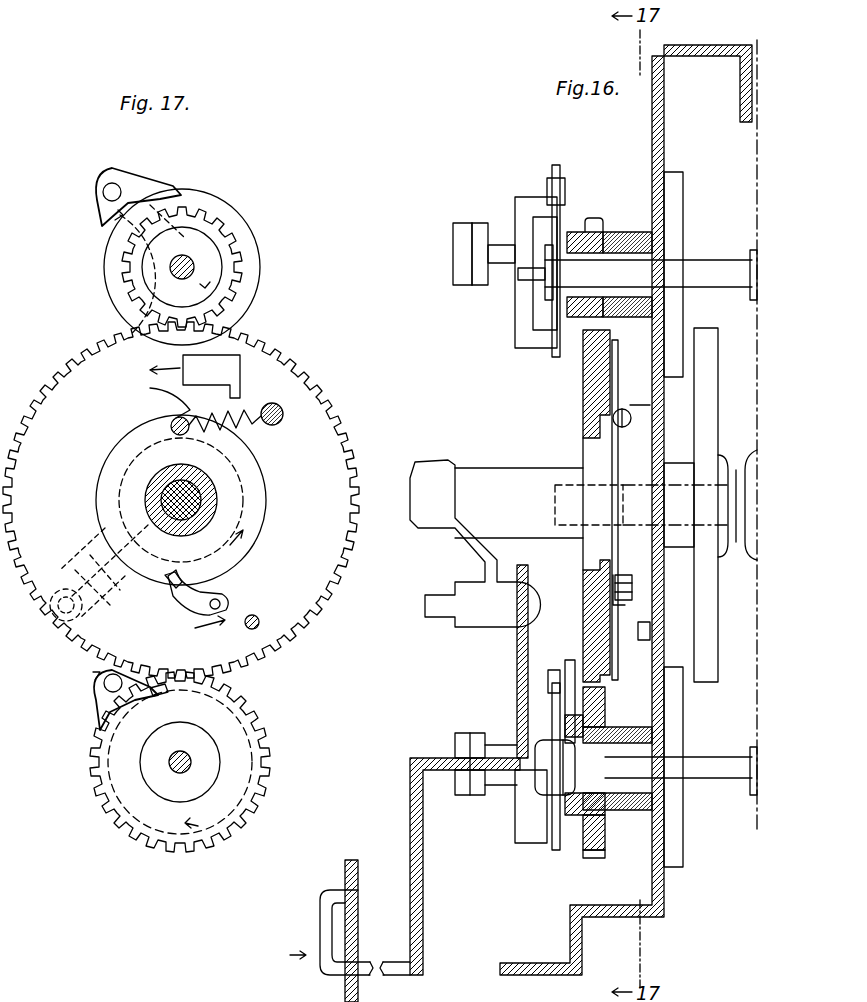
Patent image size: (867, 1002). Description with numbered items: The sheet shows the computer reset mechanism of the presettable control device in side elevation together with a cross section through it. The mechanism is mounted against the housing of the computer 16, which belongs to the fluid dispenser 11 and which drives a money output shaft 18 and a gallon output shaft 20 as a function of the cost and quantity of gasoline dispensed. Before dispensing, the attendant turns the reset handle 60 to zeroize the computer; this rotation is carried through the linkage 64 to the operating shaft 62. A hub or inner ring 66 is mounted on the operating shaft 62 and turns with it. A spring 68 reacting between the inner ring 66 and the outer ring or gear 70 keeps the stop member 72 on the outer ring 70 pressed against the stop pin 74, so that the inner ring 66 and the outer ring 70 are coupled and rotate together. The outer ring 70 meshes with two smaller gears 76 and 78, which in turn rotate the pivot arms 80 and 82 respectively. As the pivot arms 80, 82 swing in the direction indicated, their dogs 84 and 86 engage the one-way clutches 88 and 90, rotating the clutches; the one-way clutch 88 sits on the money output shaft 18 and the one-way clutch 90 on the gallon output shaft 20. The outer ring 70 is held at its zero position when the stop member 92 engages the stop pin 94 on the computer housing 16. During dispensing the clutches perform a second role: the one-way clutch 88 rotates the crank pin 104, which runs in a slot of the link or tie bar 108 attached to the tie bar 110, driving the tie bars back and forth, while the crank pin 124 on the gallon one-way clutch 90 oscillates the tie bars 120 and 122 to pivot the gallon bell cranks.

In FIG. 16, the fluid dispenser 11 is at (358, 875).
In FIG. 16, the computer 16 is at (672, 128).
In FIG. 17, the money output shaft 18 is at (186, 262).
In FIG. 16, the money output shaft 18 is at (710, 266).
In FIG. 17, the gallon output shaft 20 is at (190, 764).
In FIG. 16, the gallon output shaft 20 is at (732, 778).
In FIG. 16, the reset handle 60 is at (320, 938).
In FIG. 17, the operating shaft 62 is at (200, 513).
In FIG. 16, the operating shaft 62 is at (508, 468).
In FIG. 17, the linkage 64 is at (75, 529).
In FIG. 16, the linkage 64 is at (432, 563).
In FIG. 17, the inner ring 66 is at (254, 483).
In FIG. 16, the inner ring 66 is at (580, 452).
In FIG. 17, the spring 68 is at (158, 385).
In FIG. 16, the spring 68 is at (625, 428).
In FIG. 17, the outer ring or gear 70 is at (306, 410).
In FIG. 16, the outer ring or gear 70 is at (583, 380).
In FIG. 17, the stop member 72 is at (214, 598).
In FIG. 16, the stop member 72 is at (632, 594).
In FIG. 17, the stop pin 74 is at (163, 573).
In FIG. 16, the stop pin 74 is at (628, 575).
In FIG. 17, the gear 76 is at (238, 240).
In FIG. 16, the gear 76 is at (595, 218).
In FIG. 17, the gear 78 is at (183, 840).
In FIG. 16, the gear 78 is at (605, 712).
In FIG. 17, the pivot arm 80 is at (110, 231).
In FIG. 16, the pivot arm 80 is at (556, 165).
In FIG. 17, the pivot arm 82 is at (96, 708).
In FIG. 16, the pivot arm 82 is at (570, 660).
In FIG. 17, the dog 84 is at (160, 186).
In FIG. 16, the dog 84 is at (547, 185).
In FIG. 17, the dog 86 is at (160, 688).
In FIG. 16, the dog 86 is at (554, 670).
In FIG. 17, the one-way clutch 88 is at (259, 283).
In FIG. 16, the one-way clutch 88 is at (548, 355).
In FIG. 17, the one-way clutch 90 is at (245, 808).
In FIG. 16, the one-way clutch 90 is at (556, 850).
In FIG. 17, the stop member 92 is at (240, 380).
In FIG. 16, the stop member 92 is at (650, 405).
In FIG. 17, the stop pin 94 is at (257, 614).
In FIG. 16, the stop pin 94 is at (638, 630).
In FIG. 16, the crank pin 104 is at (500, 245).
In FIG. 16, the link or tie bar 108 is at (478, 280).
In FIG. 16, the tie bar 110 is at (458, 238).
In FIG. 16, the tie bar 120 is at (470, 795).
In FIG. 16, the tie bar 122 is at (455, 740).
In FIG. 16, the crank pin 124 is at (497, 785).